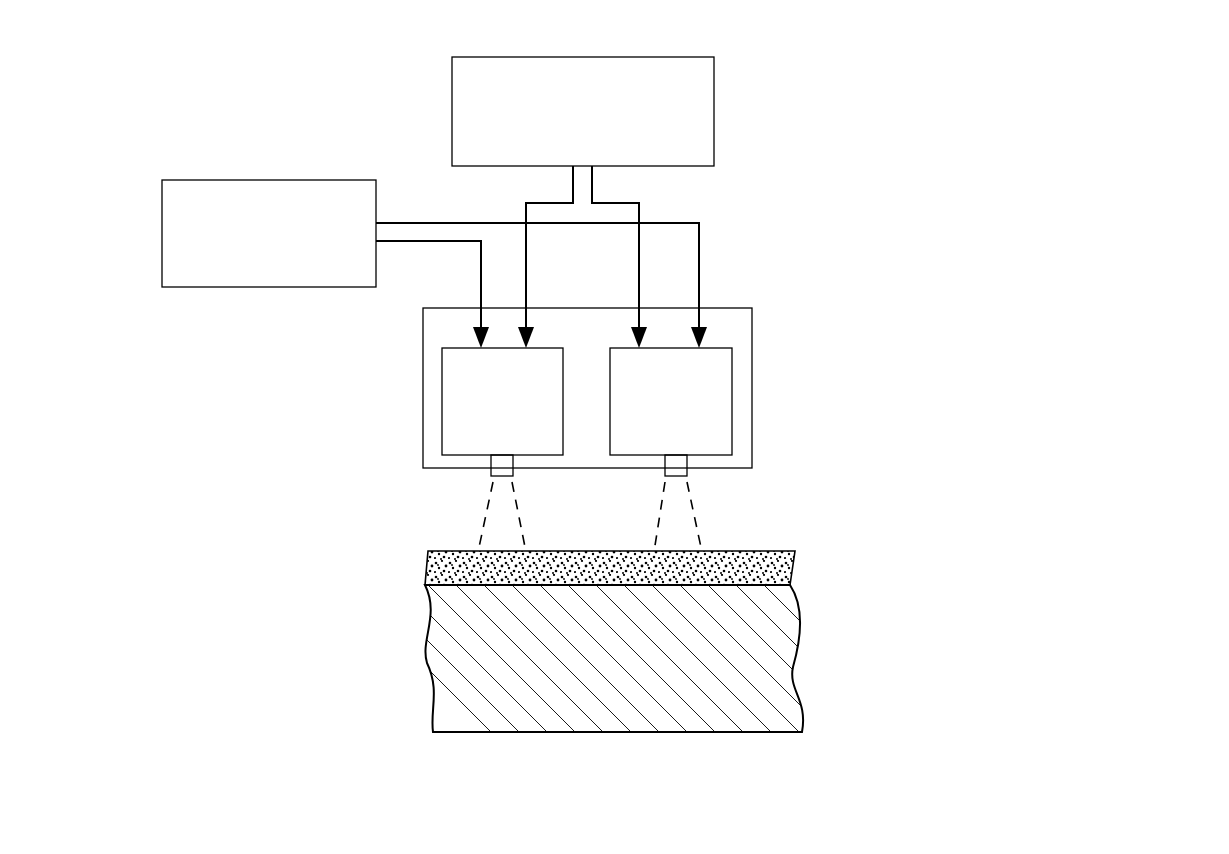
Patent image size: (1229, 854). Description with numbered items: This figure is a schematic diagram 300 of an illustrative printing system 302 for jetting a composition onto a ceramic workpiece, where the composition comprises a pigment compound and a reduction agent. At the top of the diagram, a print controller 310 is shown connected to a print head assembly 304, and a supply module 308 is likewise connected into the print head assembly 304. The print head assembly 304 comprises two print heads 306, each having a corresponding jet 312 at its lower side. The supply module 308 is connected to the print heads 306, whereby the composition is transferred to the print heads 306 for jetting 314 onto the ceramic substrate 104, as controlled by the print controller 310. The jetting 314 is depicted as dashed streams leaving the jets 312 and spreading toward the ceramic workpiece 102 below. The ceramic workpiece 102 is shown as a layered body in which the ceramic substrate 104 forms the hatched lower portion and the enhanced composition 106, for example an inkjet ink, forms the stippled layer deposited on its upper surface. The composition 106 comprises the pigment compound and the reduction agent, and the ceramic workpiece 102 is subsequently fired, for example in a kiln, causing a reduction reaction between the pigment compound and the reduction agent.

The schematic diagram 300 is at (1067, 138).
The printing system 302 is at (638, 816).
The ceramic workpiece 102 is at (617, 646).
The ceramic substrate 104 is at (795, 667).
The composition 106 is at (797, 550).
The print head assembly 304 is at (753, 335).
The print heads 306 is at (441, 368).
The supply module 308 is at (267, 180).
The print controller 310 is at (714, 130).
The jets 312 is at (491, 478).
The jetting 314 is at (482, 510).